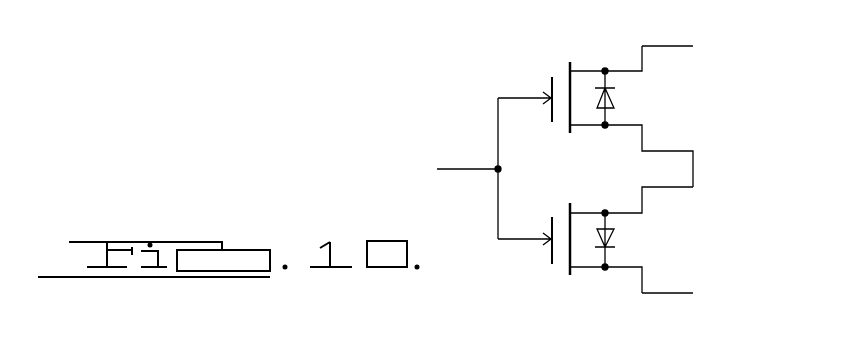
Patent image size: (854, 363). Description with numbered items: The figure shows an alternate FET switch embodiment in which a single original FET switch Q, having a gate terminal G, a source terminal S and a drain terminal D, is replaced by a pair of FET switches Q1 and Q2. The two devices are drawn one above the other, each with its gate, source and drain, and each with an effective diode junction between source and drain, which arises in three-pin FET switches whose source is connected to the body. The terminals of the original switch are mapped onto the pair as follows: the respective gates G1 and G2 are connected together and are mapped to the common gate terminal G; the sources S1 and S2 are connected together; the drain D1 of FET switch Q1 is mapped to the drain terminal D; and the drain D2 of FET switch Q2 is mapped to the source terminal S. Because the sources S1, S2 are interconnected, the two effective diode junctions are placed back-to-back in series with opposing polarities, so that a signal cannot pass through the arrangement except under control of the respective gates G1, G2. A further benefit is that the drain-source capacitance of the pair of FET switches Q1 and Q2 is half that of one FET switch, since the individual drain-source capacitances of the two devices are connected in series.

The FET switch Q is at (550, 51).
The FET switch Q1 is at (595, 108).
The FET switch Q2 is at (595, 251).
The gate terminal G is at (449, 168).
The drain terminal D is at (680, 48).
The source terminal S is at (679, 293).
The gate G1 is at (524, 116).
The drain D1 is at (606, 51).
The source S1 is at (631, 154).
The gate G2 is at (524, 257).
The source S2 is at (631, 200).
The drain D2 is at (606, 291).